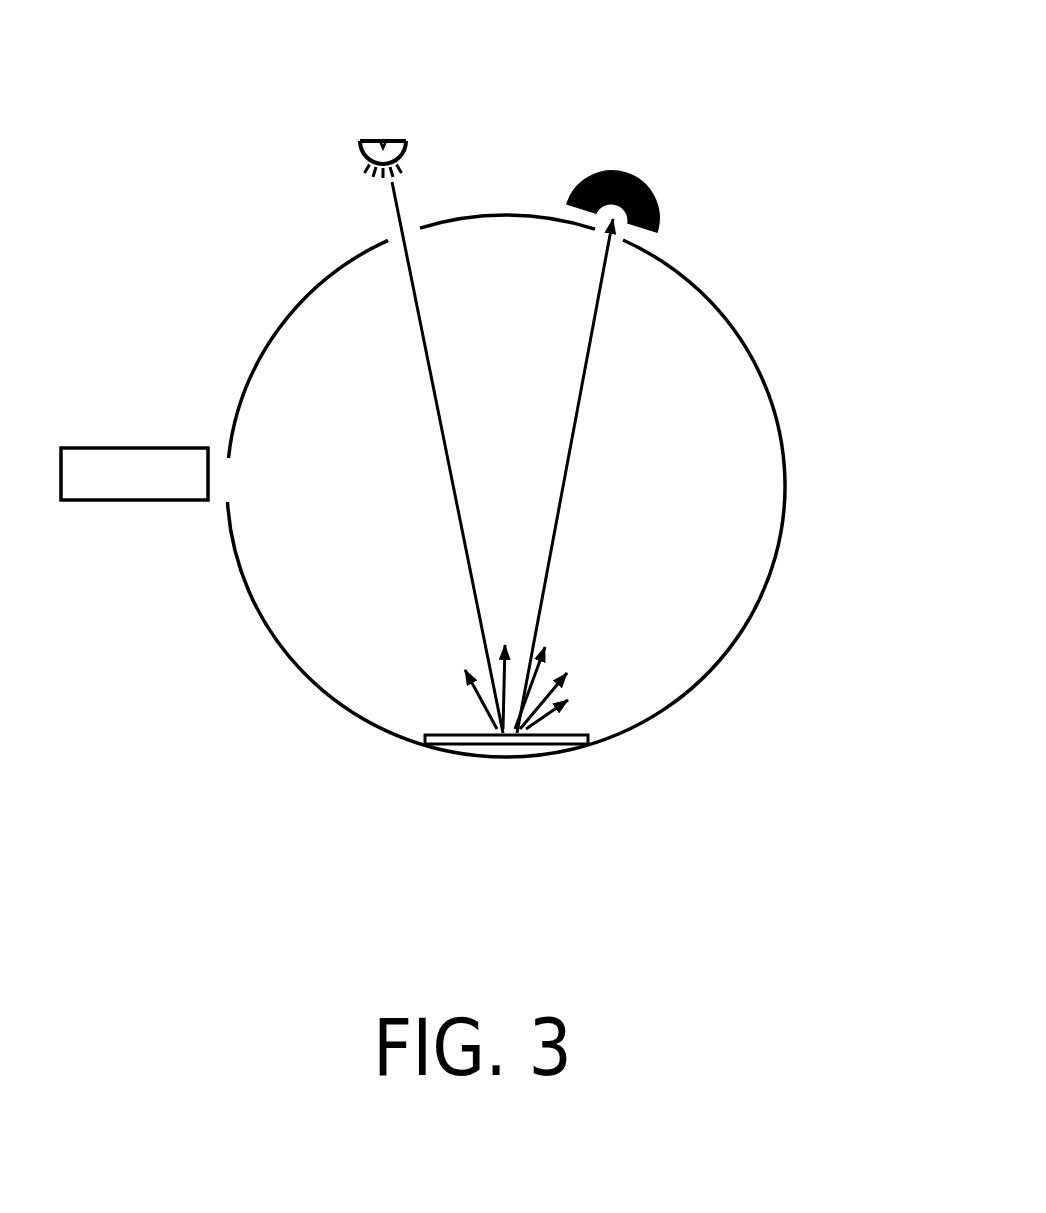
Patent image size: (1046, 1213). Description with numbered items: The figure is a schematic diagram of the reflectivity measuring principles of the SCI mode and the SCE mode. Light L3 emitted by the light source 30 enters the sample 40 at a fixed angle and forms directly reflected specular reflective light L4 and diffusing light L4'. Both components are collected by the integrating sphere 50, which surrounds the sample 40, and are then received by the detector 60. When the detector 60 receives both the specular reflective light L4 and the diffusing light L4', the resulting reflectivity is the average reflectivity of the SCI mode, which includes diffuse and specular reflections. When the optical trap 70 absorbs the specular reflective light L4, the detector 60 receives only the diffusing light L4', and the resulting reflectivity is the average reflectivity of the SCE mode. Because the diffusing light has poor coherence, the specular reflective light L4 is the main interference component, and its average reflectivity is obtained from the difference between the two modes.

The light source 30 is at (388, 140).
The sample 40 is at (515, 745).
The integrating sphere 50 is at (765, 447).
The detector 60 is at (90, 476).
The optical trap 70 is at (656, 203).
The light L3 is at (447, 457).
The specular reflective light L4 is at (576, 476).
The diffusing light L4' is at (547, 680).